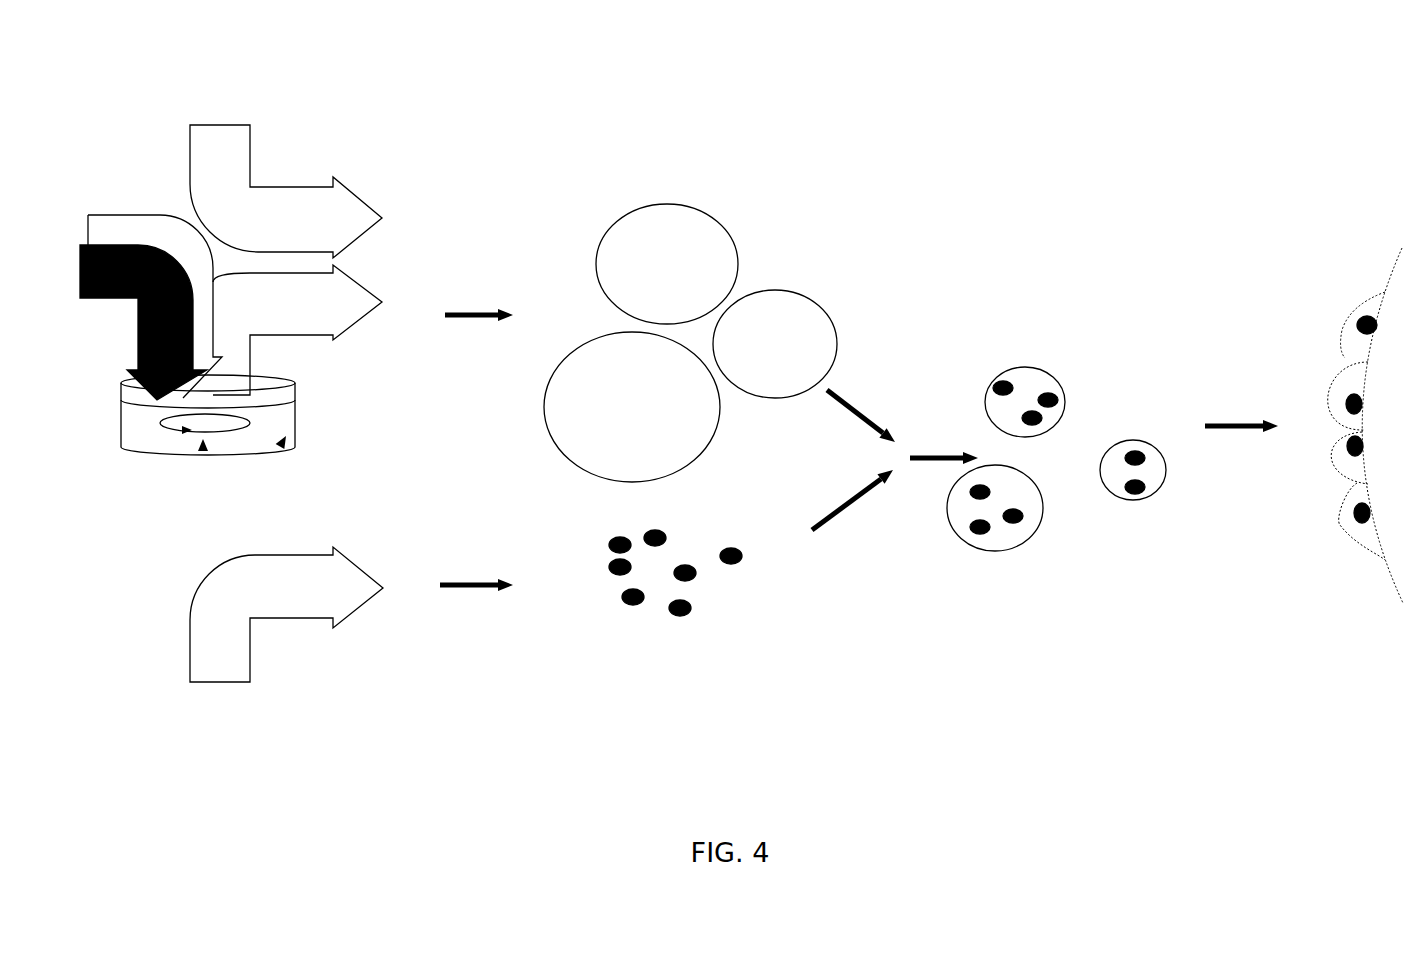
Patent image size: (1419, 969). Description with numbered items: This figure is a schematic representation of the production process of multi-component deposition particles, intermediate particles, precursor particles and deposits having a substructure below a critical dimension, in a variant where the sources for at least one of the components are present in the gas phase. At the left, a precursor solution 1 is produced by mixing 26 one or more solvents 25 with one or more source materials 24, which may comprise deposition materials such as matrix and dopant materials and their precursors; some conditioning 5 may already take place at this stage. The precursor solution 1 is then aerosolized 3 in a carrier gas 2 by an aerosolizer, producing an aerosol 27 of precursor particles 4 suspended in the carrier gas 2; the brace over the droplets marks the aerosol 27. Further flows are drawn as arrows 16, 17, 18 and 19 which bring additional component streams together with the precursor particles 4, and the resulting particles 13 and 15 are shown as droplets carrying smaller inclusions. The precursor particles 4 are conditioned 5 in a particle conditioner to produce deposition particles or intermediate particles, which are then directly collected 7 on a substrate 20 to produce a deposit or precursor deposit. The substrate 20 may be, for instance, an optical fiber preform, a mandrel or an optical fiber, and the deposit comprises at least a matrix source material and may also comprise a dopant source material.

The precursor solution 1 is at (208, 459).
The carrier gas 2 is at (305, 191).
The aerosolizing step 3 is at (480, 261).
The precursor particles 4 is at (647, 233).
The conditioning step 5 is at (944, 408).
The collecting step 7 is at (1241, 373).
The encapsulated particles 13 is at (1047, 421).
The cells 15 is at (1352, 395).
The flow arrow 16 is at (269, 614).
The process step arrow 17 is at (476, 534).
The particles 18 is at (631, 594).
The mixing arrows 19 is at (858, 447).
The substrate 20 is at (1380, 404).
The source materials 24 is at (119, 322).
The solvents 25 is at (235, 265).
The mixing 26 is at (203, 456).
The aerosol 27 is at (802, 135).